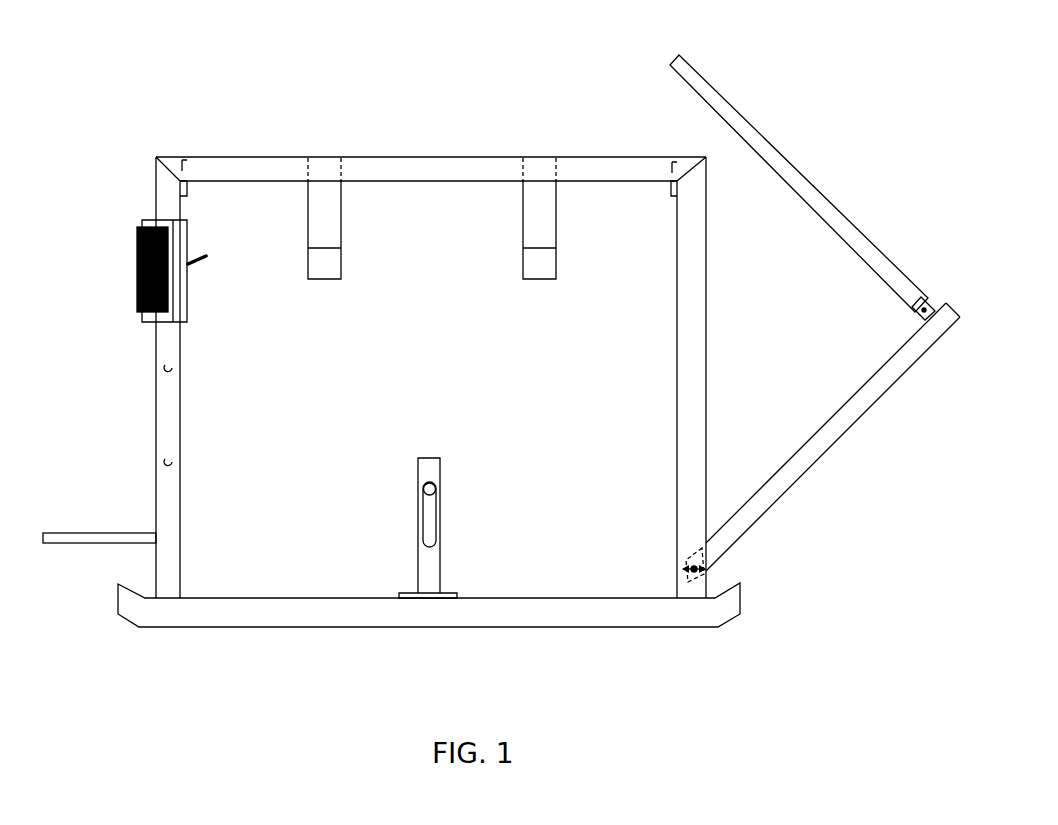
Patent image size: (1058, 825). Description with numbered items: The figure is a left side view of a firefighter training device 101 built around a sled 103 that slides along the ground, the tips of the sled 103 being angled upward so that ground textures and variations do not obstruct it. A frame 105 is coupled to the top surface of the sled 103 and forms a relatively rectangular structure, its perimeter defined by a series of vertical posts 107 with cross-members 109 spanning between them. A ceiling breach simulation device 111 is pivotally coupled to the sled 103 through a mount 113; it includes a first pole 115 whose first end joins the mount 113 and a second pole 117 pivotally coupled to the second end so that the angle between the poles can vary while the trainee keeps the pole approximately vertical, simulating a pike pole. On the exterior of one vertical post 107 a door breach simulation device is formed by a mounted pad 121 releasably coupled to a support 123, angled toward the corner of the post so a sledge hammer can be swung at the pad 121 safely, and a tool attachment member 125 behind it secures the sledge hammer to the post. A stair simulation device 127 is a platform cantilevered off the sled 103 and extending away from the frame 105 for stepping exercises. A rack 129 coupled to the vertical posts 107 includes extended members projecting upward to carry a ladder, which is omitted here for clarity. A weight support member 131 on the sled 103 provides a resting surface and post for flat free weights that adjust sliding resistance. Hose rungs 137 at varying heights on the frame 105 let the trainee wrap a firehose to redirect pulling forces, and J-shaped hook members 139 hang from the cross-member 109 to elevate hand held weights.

The firefighter training device 101 is at (302, 47).
The sled 103 is at (380, 627).
The frame 105 is at (609, 129).
The vertical posts 107 is at (156, 191).
The cross-members 109 is at (416, 157).
The ceiling breach simulation device 111 is at (903, 206).
The mount 113 is at (682, 578).
The first pole 115 is at (852, 427).
The second pole 117 is at (758, 132).
The mounted pad 121 is at (137, 270).
The support 123 is at (152, 322).
The tool attachment member 125 is at (206, 262).
The stair simulation device 127 is at (111, 533).
The rack 129 is at (188, 168).
The weight support member 131 is at (406, 510).
The hose rung 137 is at (172, 462).
The hook member 139 is at (341, 272).